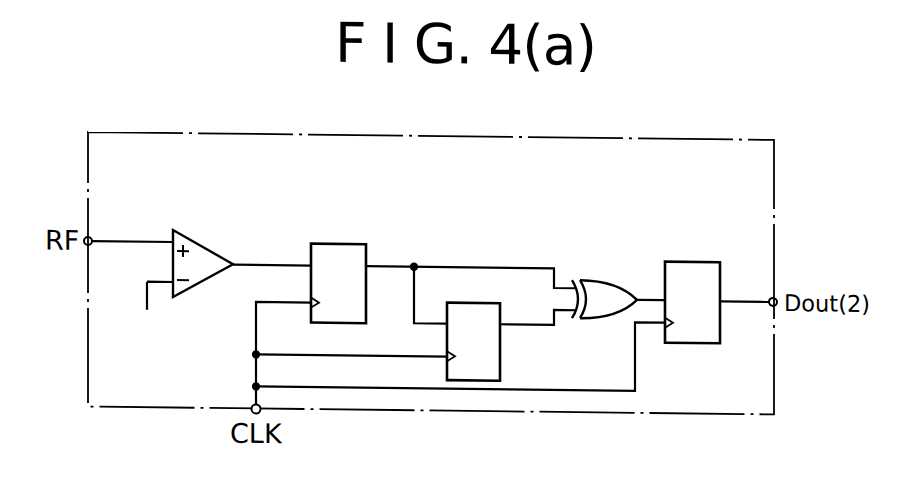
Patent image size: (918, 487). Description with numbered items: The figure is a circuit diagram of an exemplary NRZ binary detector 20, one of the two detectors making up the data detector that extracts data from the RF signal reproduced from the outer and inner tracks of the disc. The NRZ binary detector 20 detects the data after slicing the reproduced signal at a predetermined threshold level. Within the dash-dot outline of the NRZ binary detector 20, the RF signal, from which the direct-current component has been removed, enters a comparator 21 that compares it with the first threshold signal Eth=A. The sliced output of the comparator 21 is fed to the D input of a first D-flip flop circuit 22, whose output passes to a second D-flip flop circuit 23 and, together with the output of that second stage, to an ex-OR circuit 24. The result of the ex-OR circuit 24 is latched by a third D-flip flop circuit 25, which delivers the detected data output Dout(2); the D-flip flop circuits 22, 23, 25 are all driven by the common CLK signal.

The NRZ binary detector 20 is at (680, 131).
The comparator 21 is at (210, 246).
The D-flip flop circuit 22 is at (353, 240).
The D-flip flop circuit 23 is at (500, 352).
The ex-OR circuit 24 is at (609, 274).
The D-flip flop circuit 25 is at (701, 254).